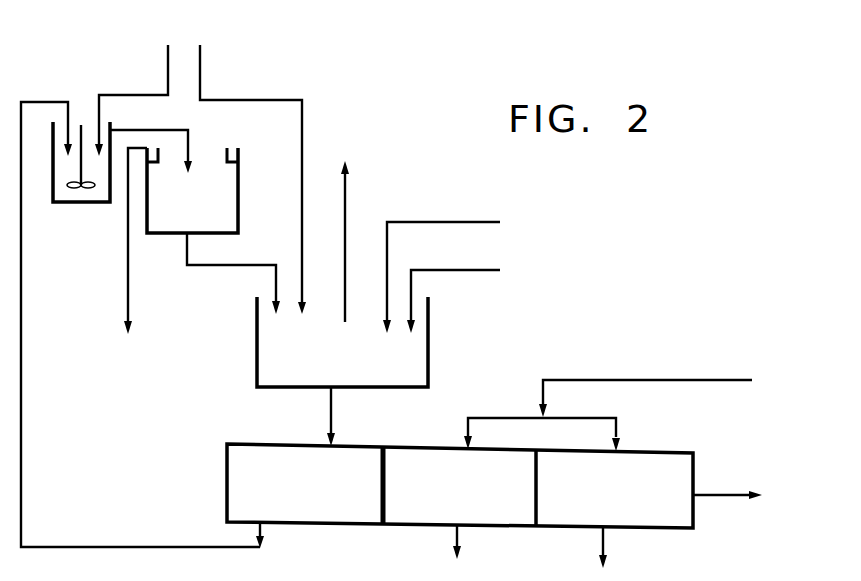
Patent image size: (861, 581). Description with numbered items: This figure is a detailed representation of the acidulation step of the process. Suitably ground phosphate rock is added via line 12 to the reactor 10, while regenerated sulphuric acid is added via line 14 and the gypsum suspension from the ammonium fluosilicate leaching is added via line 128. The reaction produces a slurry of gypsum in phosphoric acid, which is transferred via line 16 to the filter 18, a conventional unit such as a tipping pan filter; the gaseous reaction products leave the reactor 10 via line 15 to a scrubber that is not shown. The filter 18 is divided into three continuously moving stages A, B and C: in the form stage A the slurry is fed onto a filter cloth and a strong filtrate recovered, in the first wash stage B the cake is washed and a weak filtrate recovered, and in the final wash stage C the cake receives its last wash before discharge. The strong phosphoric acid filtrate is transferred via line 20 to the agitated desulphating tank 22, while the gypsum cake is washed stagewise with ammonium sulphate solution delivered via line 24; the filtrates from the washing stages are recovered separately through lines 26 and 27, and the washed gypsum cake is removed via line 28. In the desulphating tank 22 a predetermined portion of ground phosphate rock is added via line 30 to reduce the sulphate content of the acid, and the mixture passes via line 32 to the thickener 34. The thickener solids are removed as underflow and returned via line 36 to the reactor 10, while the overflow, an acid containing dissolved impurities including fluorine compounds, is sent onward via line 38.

The reactor 10 is at (429, 337).
The line 12 is at (283, 100).
The line 14 is at (450, 222).
The line 15 is at (346, 208).
The line 16 is at (332, 406).
The filter 18 is at (226, 464).
The line 20 is at (22, 337).
The desulphating tank 22 is at (96, 204).
The line 24 is at (613, 380).
The line 26 is at (460, 535).
The line 27 is at (607, 537).
The line 28 is at (722, 495).
The line 30 is at (142, 95).
The line 32 is at (162, 130).
The thickener 34 is at (239, 190).
The line 36 is at (233, 266).
The line 38 is at (128, 288).
The line 128 is at (470, 270).